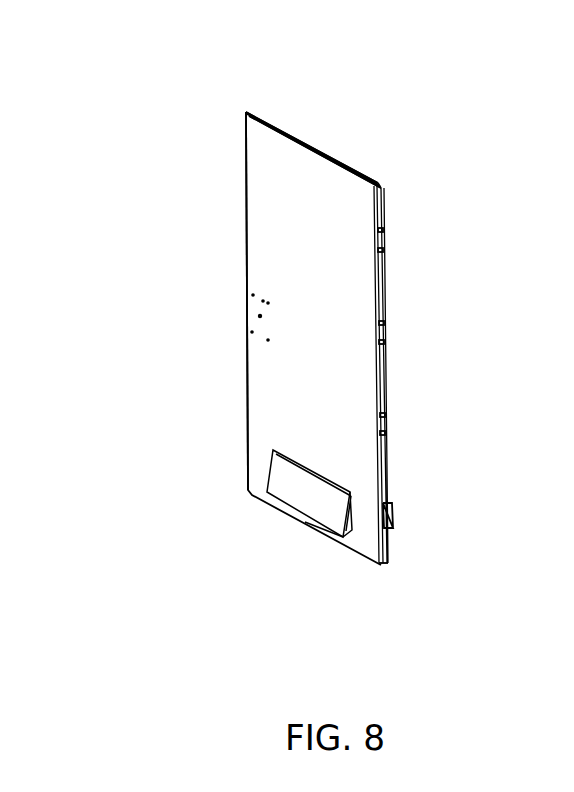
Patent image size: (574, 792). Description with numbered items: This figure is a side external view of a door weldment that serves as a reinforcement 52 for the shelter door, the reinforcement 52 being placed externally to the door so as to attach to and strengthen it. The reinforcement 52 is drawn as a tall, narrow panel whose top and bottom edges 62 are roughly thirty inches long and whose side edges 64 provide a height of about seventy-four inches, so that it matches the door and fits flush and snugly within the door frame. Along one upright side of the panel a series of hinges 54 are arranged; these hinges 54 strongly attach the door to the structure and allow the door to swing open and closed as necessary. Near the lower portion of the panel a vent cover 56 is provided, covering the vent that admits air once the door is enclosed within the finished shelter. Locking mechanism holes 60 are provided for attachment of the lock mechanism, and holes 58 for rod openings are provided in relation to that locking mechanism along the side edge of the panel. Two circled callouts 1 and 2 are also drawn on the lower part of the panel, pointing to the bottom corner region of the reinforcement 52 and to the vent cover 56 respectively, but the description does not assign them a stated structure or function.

The door panel 52 is at (358, 310).
The hinges 54 is at (453, 572).
The shelf bracket 56 is at (264, 558).
The side edge 58 is at (215, 482).
The perforations 60 is at (217, 297).
The top rail 62 is at (380, 156).
The door assembly 64 is at (117, 495).
The circled detail 1 is at (382, 565).
The circled detail 2 is at (313, 527).